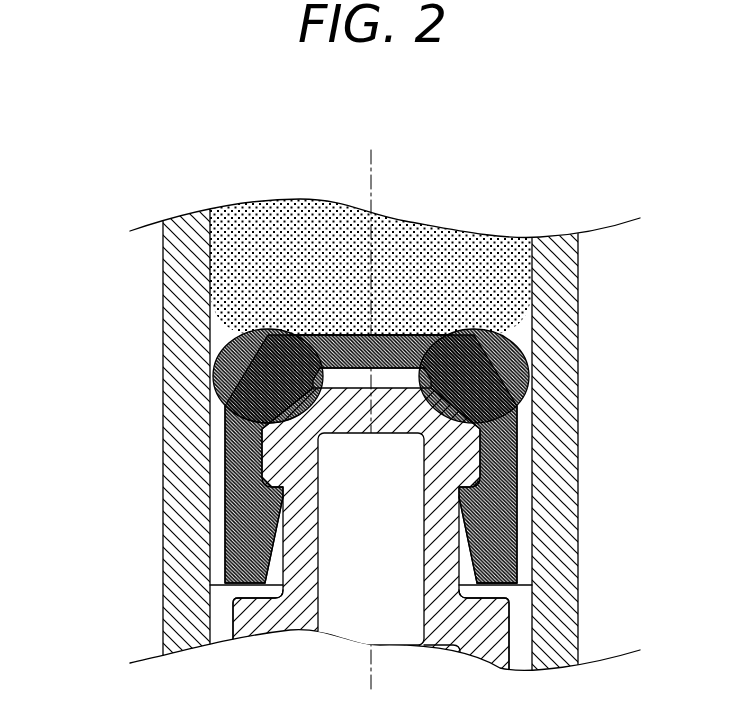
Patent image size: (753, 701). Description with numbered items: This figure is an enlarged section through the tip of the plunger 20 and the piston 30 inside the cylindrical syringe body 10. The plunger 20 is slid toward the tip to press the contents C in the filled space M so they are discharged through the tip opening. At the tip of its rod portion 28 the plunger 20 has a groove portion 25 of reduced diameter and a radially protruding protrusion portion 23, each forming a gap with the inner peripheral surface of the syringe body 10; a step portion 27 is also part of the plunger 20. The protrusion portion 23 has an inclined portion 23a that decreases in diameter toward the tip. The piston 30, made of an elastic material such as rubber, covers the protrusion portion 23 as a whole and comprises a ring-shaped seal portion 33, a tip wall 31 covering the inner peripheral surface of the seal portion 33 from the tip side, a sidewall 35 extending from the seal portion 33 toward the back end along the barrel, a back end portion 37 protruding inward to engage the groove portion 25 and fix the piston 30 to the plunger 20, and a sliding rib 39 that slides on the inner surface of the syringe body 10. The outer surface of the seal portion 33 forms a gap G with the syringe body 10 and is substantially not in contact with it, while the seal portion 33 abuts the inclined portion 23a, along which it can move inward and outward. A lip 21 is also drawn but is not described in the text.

The syringe body 10 is at (150, 314).
The plunger 20 is at (359, 422).
The first lip portion 21 is at (324, 342).
The protrusion portion 23 is at (262, 448).
The inclined portion 23a is at (258, 418).
The groove portion 25 is at (298, 522).
The step portion 27 is at (267, 620).
The rod portion 28 is at (488, 660).
The piston 30 is at (398, 334).
The tip wall 31 is at (352, 342).
The seal portion 33 is at (508, 373).
The sidewall 35 is at (508, 453).
The back end portion 37 is at (510, 570).
The sliding rib 39 is at (217, 568).
The contents C is at (510, 256).
The filled space M is at (350, 257).
The gap G is at (222, 332).